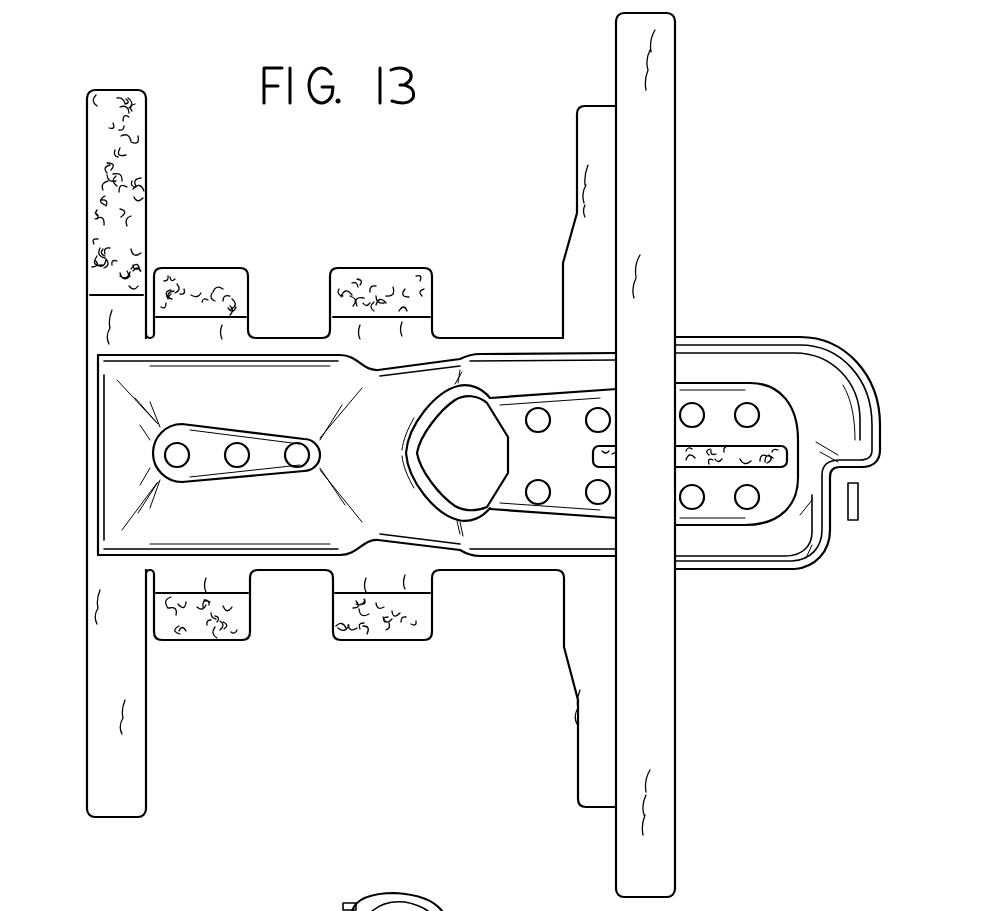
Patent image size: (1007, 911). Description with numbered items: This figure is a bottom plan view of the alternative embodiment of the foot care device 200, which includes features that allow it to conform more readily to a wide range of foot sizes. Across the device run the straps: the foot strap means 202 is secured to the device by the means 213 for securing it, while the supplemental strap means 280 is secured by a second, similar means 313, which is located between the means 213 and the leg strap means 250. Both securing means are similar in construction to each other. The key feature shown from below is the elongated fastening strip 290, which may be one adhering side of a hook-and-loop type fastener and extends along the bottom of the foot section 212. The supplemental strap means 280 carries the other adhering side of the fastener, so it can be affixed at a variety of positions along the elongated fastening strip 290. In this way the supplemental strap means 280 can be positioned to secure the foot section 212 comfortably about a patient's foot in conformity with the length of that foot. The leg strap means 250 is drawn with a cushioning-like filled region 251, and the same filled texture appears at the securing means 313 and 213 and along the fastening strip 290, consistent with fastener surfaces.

The foot care device 200 is at (145, 82).
The leg strap means 250 is at (145, 432).
The cushioning foam 251 is at (77, 311).
The means for securing supplemental foot strap means 313 is at (193, 270).
The means for securing foot strap means 213 is at (367, 263).
The foot strap means 202 is at (566, 232).
The foot section 212 is at (748, 320).
The supplemental strap means 280 is at (683, 32).
The elongated fastening strip 290 is at (773, 446).